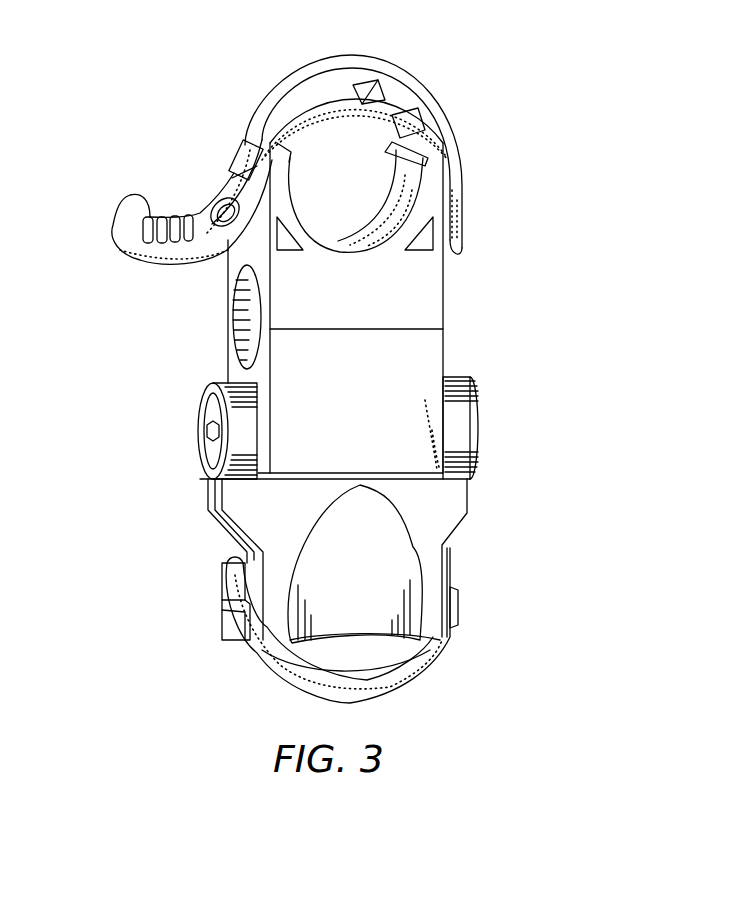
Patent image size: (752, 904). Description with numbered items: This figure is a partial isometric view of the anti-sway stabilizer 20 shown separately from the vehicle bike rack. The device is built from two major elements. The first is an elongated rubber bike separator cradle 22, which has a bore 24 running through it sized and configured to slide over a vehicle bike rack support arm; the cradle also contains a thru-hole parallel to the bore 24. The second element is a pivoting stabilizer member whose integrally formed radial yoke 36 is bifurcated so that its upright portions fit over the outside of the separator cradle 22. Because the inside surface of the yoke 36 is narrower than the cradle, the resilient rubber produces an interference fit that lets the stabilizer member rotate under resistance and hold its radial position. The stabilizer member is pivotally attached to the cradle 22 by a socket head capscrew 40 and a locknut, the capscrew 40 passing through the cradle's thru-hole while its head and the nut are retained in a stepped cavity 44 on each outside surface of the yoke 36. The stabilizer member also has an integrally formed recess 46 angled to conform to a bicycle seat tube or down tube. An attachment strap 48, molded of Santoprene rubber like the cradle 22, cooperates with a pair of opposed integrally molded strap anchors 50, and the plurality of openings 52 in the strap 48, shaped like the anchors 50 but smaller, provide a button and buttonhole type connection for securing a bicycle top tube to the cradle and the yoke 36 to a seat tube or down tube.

The anti-sway stabilizer 20 is at (495, 215).
The bike separator cradle 22 is at (225, 272).
The bore 24 is at (228, 342).
The radial yoke 36 is at (470, 506).
The capscrew 40 is at (205, 436).
The stepped cavity 44 is at (204, 484).
The recess 46 is at (440, 662).
The attachment strap 48 is at (101, 0).
The strap anchors 50 is at (238, 146).
The openings 52 is at (368, 88).